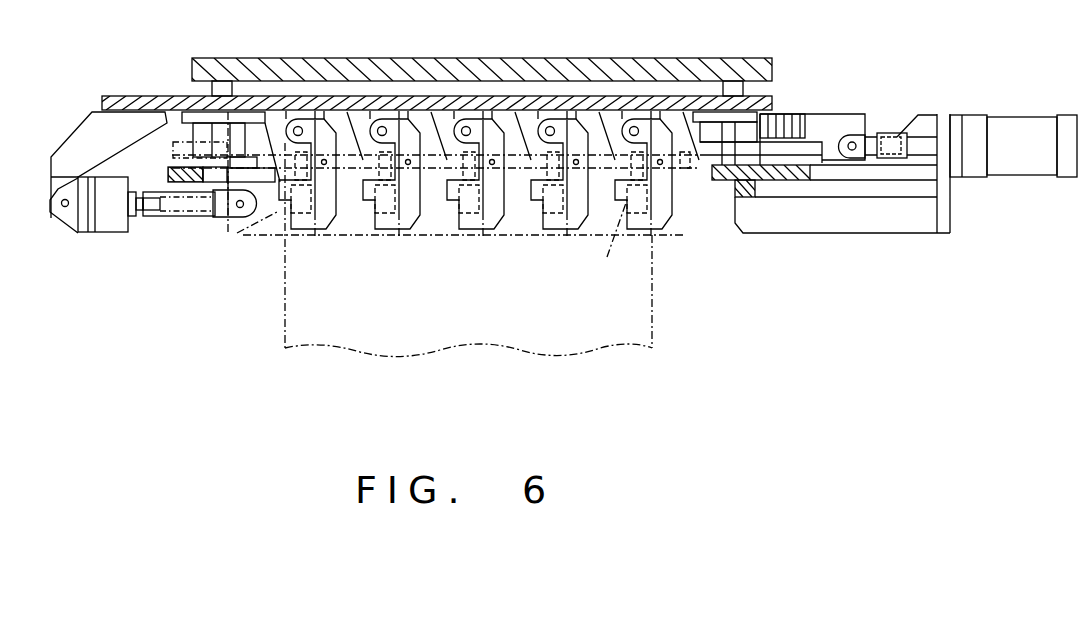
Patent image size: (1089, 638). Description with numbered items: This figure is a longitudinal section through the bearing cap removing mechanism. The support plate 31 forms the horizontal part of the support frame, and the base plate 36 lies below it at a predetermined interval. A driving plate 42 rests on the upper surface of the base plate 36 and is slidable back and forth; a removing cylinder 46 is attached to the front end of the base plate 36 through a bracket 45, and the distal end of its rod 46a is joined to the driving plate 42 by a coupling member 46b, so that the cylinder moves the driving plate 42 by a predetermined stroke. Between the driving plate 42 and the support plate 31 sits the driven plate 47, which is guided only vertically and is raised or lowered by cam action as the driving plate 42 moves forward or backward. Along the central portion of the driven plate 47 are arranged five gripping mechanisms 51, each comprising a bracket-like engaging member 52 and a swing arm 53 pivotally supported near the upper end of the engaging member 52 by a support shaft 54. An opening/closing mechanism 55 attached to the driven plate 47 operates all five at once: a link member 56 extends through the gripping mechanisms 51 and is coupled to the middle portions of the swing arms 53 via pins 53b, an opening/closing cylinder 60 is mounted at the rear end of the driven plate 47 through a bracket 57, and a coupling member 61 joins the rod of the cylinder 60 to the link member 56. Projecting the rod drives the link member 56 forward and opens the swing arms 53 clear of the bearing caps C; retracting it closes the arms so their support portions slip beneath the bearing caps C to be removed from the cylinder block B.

The support plate 31 is at (620, 58).
The driven plate 47 is at (487, 106).
The driving plate 42 is at (695, 115).
The base plate 36 is at (800, 167).
The bracket 45 is at (860, 237).
The removing cylinder 46 is at (1025, 118).
The rod 46a is at (927, 137).
The coupling member 46b is at (857, 113).
The gripping mechanism 51 is at (438, 278).
The engaging member 52 is at (391, 150).
The swing arm 53 is at (440, 215).
The pin 53b is at (323, 123).
The support shaft 54 is at (383, 128).
The opening/closing mechanism 55 is at (141, 245).
The link member 56 is at (352, 195).
The bracket 57 is at (80, 137).
The opening/closing cylinder 60 is at (107, 232).
The coupling member 61 is at (192, 218).
The cylinder block B is at (285, 292).
The bearing cap C is at (423, 239).